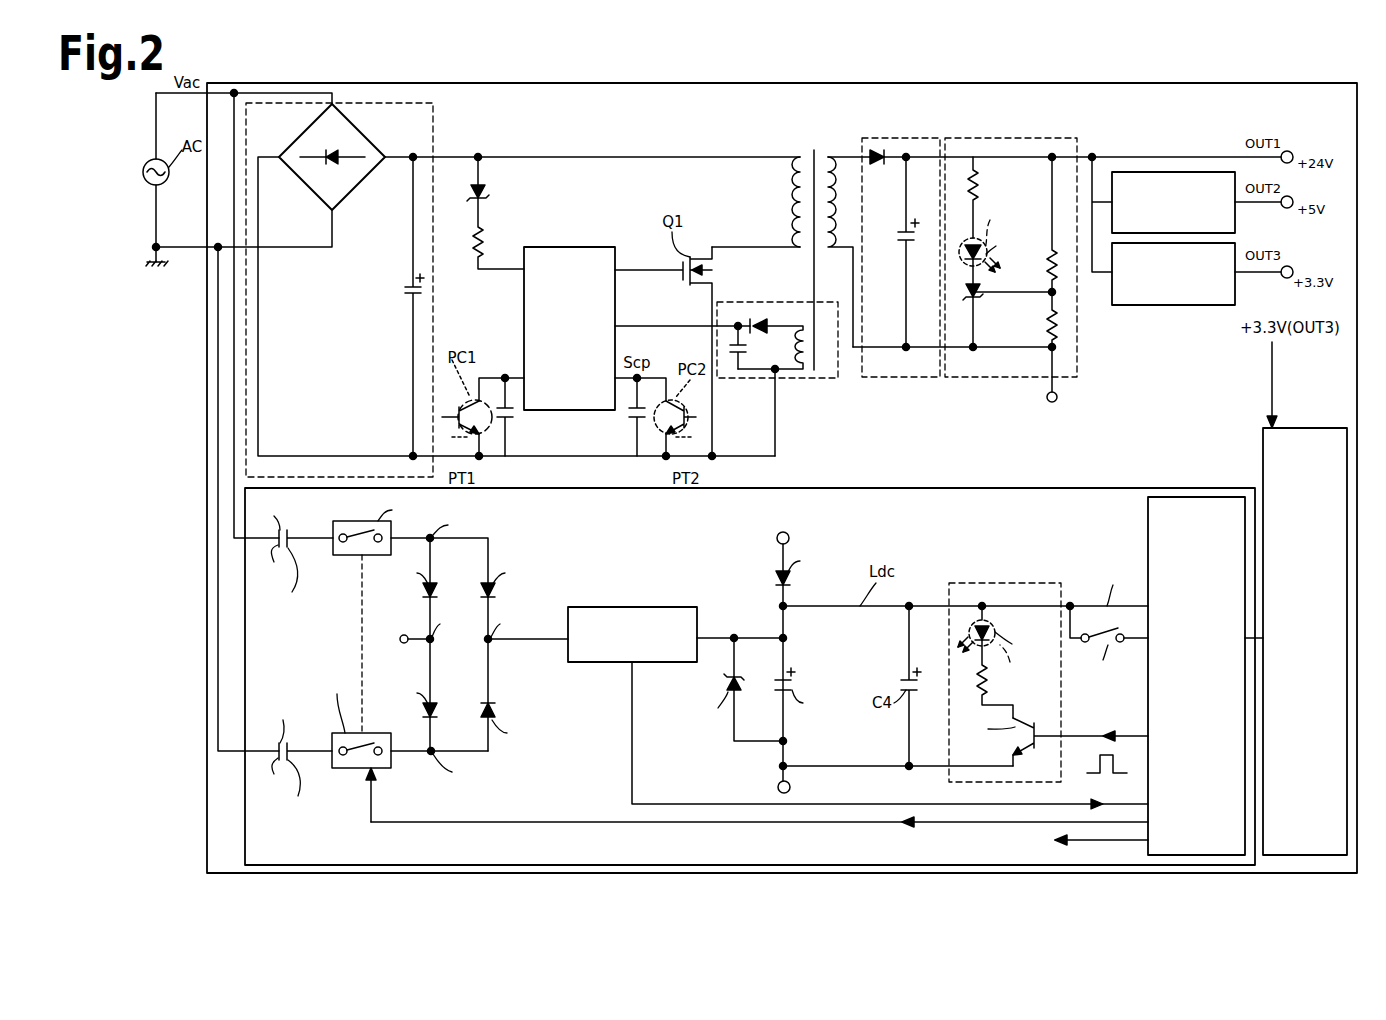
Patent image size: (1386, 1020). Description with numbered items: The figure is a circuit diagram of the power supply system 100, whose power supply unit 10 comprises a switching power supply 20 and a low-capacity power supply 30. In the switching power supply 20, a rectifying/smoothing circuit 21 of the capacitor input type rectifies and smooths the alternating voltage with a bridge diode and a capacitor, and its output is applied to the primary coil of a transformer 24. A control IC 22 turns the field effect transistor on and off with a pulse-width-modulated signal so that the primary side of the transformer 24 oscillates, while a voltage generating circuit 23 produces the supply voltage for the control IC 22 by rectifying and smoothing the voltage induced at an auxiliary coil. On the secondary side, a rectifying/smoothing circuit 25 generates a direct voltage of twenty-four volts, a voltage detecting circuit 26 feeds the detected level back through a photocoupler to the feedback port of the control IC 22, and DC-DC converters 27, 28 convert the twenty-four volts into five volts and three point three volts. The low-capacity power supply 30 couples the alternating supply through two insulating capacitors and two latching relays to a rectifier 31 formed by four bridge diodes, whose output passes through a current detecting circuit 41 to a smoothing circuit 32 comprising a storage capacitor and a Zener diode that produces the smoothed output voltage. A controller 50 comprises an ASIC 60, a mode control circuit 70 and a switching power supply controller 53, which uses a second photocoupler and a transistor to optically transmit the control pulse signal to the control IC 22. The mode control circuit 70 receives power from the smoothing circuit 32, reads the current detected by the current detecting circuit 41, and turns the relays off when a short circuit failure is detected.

The power supply system 100 is at (1143, 83).
The power supply unit 10 is at (797, 421).
The switching power supply 20 is at (740, 145).
The rectifying/smoothing circuit 21 is at (433, 122).
The control IC 22 is at (560, 247).
The voltage generating circuit 23 is at (757, 300).
The transformer 24 is at (812, 152).
The rectifying/smoothing circuit 25 is at (922, 138).
The voltage detecting circuit 26 is at (1017, 138).
The DC-DC converter 27 is at (1149, 172).
The DC-DC converter 28 is at (1185, 305).
The low-capacity power supply 30 is at (857, 488).
The rectifier 31 is at (540, 548).
The smoothing circuit 32 is at (763, 613).
The current detecting circuit 41 is at (650, 607).
The controller 50 is at (1218, 465).
The switching power supply controller 53 is at (993, 583).
The application specific integrated circuit 60 is at (1305, 428).
The mode control circuit 70 is at (1148, 522).